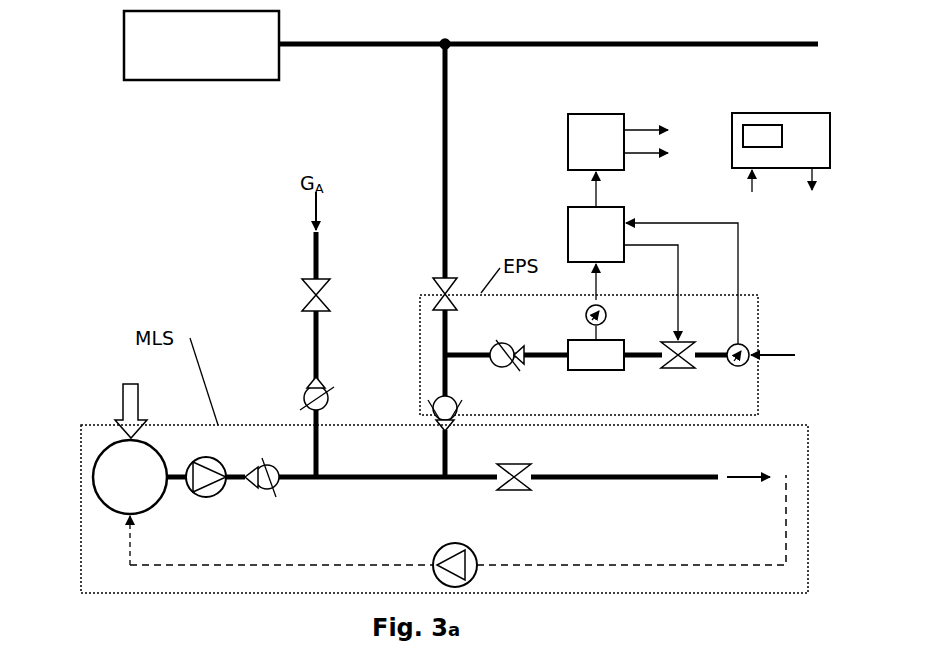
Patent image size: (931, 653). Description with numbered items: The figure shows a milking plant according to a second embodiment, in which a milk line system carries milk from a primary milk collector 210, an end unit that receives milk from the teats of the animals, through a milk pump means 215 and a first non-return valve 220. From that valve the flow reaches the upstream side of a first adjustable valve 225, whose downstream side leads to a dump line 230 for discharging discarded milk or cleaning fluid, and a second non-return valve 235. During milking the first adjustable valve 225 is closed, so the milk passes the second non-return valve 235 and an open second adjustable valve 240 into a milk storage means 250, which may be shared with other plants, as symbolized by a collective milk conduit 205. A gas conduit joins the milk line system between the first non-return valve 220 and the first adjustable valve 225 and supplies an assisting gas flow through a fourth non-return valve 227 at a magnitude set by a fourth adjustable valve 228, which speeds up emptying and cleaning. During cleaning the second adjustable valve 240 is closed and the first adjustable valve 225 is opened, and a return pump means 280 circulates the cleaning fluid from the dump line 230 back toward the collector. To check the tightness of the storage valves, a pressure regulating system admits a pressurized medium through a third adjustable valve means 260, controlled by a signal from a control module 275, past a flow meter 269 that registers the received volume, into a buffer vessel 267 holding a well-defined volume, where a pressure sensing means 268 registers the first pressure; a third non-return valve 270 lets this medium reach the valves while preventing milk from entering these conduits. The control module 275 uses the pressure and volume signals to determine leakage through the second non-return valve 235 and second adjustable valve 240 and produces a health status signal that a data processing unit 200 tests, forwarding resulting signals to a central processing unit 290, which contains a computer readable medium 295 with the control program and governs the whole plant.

The data processing unit 200 is at (596, 113).
The collective milk conduit 205 is at (738, 43).
The primary milk collector 210 is at (107, 447).
The milk pump means 215 is at (210, 498).
The first non-return valve 220 is at (278, 497).
The first adjustable valve 225 is at (497, 487).
The fourth non-return valve 227 is at (305, 390).
The fourth adjustable valve 228 is at (312, 297).
The dump line 230 is at (641, 480).
The second non-return valve 235 is at (438, 400).
The second adjustable valve 240 is at (440, 293).
The milk storage means 250 is at (124, 44).
The third adjustable valve means 260 is at (668, 368).
The buffer vessel 267 is at (568, 343).
The pressure sensing means 268 is at (607, 315).
The flow meter 269 is at (745, 344).
The third non-return valve 270 is at (512, 370).
The control module 275 is at (627, 216).
The return pump means 280 is at (470, 549).
The central processing unit 290 is at (795, 113).
The computer readable medium 295 is at (763, 125).